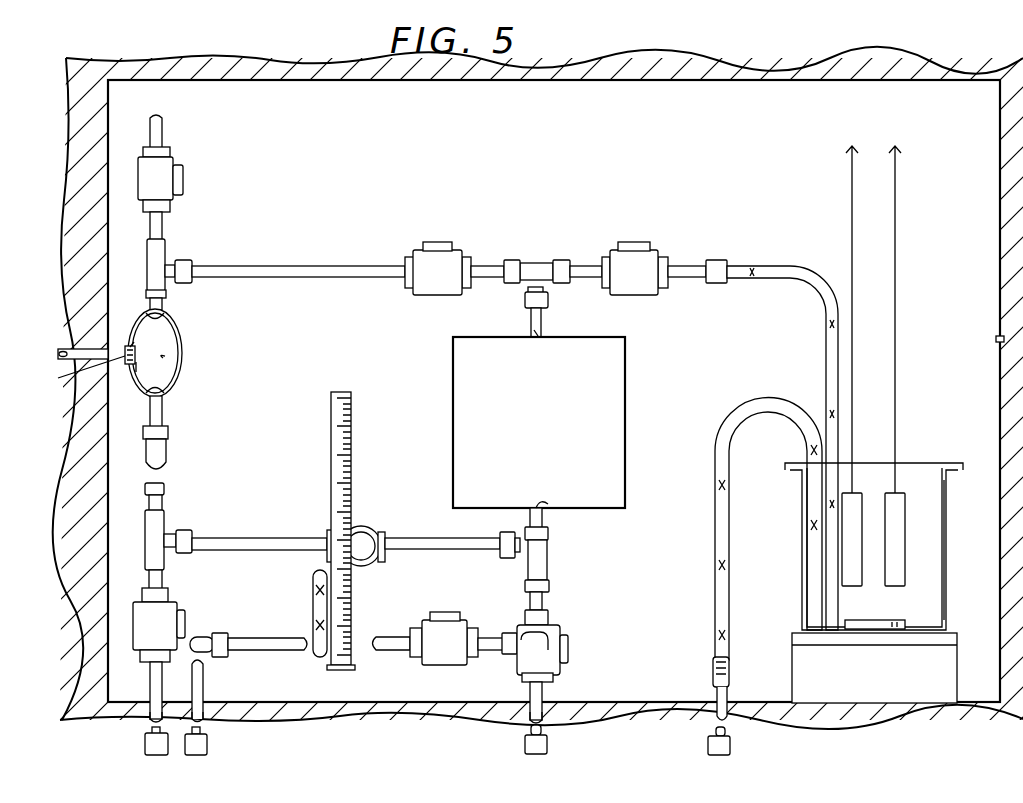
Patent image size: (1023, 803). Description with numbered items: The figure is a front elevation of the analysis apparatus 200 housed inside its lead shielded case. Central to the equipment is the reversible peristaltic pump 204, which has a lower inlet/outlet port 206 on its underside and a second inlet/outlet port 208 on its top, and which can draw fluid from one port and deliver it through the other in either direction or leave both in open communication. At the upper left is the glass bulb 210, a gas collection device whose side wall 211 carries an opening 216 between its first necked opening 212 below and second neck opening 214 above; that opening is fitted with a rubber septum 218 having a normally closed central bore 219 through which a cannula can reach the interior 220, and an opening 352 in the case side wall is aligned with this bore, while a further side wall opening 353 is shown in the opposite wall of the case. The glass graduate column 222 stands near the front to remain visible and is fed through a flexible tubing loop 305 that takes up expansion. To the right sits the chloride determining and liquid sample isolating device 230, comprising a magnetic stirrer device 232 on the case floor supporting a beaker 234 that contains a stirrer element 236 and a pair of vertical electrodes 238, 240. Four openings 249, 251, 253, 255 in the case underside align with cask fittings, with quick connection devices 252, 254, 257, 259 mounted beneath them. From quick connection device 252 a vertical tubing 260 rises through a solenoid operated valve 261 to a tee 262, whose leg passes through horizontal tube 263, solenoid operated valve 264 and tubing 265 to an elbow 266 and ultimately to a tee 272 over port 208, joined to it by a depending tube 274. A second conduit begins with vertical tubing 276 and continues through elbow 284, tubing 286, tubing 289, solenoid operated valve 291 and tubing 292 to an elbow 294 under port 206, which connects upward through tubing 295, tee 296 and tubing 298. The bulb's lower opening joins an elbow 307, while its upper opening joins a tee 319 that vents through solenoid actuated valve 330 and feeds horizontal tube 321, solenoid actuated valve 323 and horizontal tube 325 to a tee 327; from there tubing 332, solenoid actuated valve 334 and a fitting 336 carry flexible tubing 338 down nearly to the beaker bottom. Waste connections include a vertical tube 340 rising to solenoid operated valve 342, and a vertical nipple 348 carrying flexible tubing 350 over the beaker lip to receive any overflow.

The analysis apparatus 200 is at (570, 238).
The peristaltic pump 204 is at (627, 430).
The inlet/outlet port 206 is at (548, 507).
The second inlet/outlet port 208 is at (542, 336).
The glass bulb 210 is at (180, 348).
The side wall 211 is at (139, 312).
The first necked opening 212 is at (170, 384).
The second neck opening 214 is at (168, 327).
The opening 216 is at (140, 382).
The rubber septum 218 is at (128, 345).
The central bore 219 is at (70, 374).
The interior 220 is at (163, 357).
The glass graduate column 222 is at (352, 450).
The chloride determining and liquid sample isolating device 230 is at (948, 592).
The magnetic stirrer device 232 is at (800, 668).
The beaker 234 is at (946, 542).
The stirrer element 236 is at (882, 631).
The electrode 238 is at (850, 588).
The electrode 240 is at (893, 588).
The opening 249 is at (150, 716).
The opening 251 is at (203, 715).
The quick connection device 252 is at (145, 749).
The opening 253 is at (531, 716).
The quick connection device 254 is at (207, 748).
The opening 255 is at (713, 667).
The quick connection device 257 is at (547, 747).
The quick connection device 259 is at (708, 744).
The tubing 260 is at (150, 677).
The solenoid operated valve 261 is at (172, 612).
The tee 262 is at (166, 532).
The horizontal tube 263 is at (286, 536).
The solenoid operated valve 264 is at (368, 527).
The tubing 265 is at (444, 537).
The elbow 266 is at (503, 532).
The tee 272 is at (524, 302).
The depending tube 274 is at (530, 324).
The tubing 276 is at (203, 693).
The elbow 284 is at (223, 635).
The tubing 286 is at (273, 652).
The tubing 289 is at (386, 635).
The solenoid operated valve 291 is at (459, 628).
The tubing 292 is at (493, 652).
The elbow 294 is at (558, 632).
The tubing 295 is at (544, 600).
The tee 296 is at (548, 561).
The tubing 298 is at (548, 532).
The flexible tubing loop 305 is at (318, 603).
The elbow 307 is at (168, 451).
The tee 319 is at (170, 262).
The horizontal tube 321 is at (344, 264).
The solenoid actuated valve 323 is at (441, 240).
The horizontal tube 325 is at (487, 262).
The tee 327 is at (535, 260).
The solenoid actuated valve 330 is at (173, 170).
The tubing 332 is at (590, 279).
The solenoid actuated valve 334 is at (645, 241).
The fitting 336 is at (684, 265).
The flexible tubing 338 is at (770, 265).
The vertical tube 340 is at (545, 693).
The solenoid operated valve 342 is at (553, 666).
The vertical nipple 348 is at (727, 688).
The flexible tubing 350 is at (716, 523).
The opening 352 is at (58, 350).
The wall feedthrough 353 is at (1000, 340).